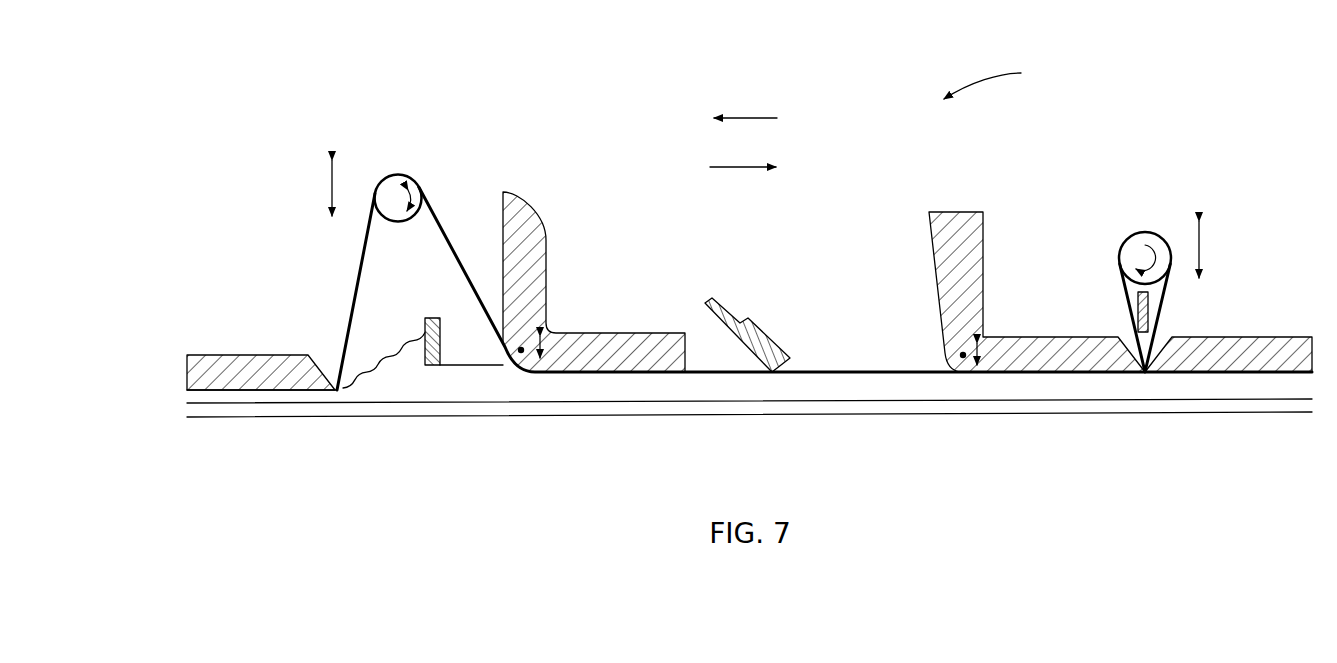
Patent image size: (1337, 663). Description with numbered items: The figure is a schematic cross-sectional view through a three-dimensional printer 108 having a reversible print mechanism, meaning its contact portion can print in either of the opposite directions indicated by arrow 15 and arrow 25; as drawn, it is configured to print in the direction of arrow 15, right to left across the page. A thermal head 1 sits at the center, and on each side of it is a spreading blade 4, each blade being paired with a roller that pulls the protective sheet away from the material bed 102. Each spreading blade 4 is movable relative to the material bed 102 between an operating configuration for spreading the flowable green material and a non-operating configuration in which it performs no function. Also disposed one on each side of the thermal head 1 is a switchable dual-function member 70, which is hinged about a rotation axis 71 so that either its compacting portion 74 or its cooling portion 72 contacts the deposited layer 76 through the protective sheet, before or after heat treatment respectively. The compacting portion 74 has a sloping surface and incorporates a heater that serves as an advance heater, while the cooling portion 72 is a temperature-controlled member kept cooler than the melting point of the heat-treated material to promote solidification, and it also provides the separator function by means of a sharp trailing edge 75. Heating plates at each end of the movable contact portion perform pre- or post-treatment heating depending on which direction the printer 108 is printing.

The thermal head 1 is at (772, 374).
The spreading blade 4 is at (425, 366).
The arrow 15 is at (755, 116).
The arrow 25 is at (745, 169).
The switchable dual-function member 70 is at (555, 323).
The rotation axis 71 is at (520, 354).
The cooling portion 72 is at (530, 236).
The compacting portion 74 is at (637, 343).
The sharp trailing edge 75 is at (503, 192).
The deposited layer 76 is at (700, 382).
The material bed 102 is at (457, 397).
The printer 108 is at (1005, 80).